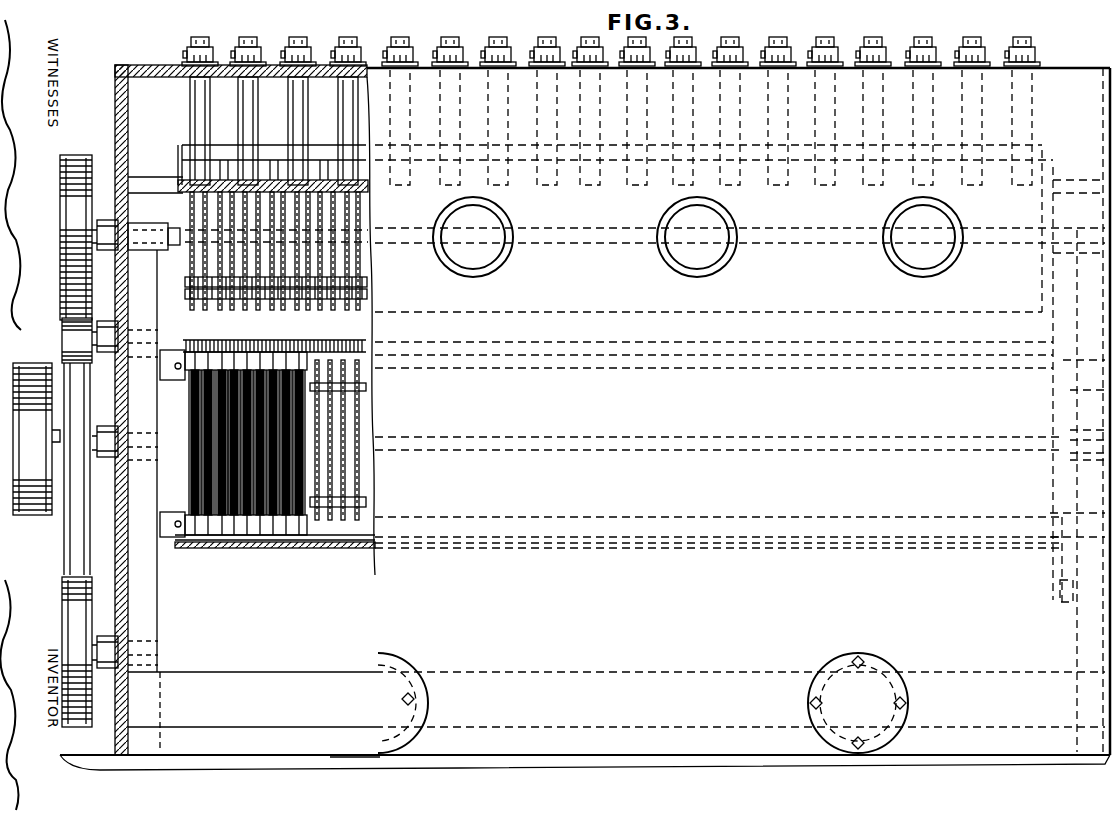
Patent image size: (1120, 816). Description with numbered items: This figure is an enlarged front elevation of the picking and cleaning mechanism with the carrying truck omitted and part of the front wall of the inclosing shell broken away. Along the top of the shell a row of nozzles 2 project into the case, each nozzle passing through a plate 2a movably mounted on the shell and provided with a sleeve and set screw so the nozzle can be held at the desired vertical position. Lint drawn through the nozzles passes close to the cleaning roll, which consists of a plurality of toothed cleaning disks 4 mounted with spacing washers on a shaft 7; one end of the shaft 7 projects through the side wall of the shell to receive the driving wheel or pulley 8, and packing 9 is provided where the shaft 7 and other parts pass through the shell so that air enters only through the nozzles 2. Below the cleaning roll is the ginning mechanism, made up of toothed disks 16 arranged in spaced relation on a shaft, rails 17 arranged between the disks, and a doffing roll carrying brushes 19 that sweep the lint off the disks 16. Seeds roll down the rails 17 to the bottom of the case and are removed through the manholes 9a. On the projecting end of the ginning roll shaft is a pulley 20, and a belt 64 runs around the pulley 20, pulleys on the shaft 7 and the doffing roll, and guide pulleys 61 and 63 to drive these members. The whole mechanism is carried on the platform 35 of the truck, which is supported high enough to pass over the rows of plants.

The nozzle 2 is at (188, 110).
The plate 2a is at (298, 62).
The cleaning disk 4 is at (283, 308).
The shaft 7 is at (174, 230).
The driving wheel or pulley 8 is at (60, 213).
The packing 9 is at (107, 220).
The manhole 9a is at (395, 680).
The toothed disk 16 is at (356, 545).
The rail 17 is at (272, 540).
The brush 19 is at (226, 346).
The sprocket wheel or pulley 20 is at (60, 518).
The platform 35 is at (335, 758).
The guide pulley 61 is at (62, 332).
The guide pulley 63 is at (62, 602).
The belt 64 is at (84, 552).